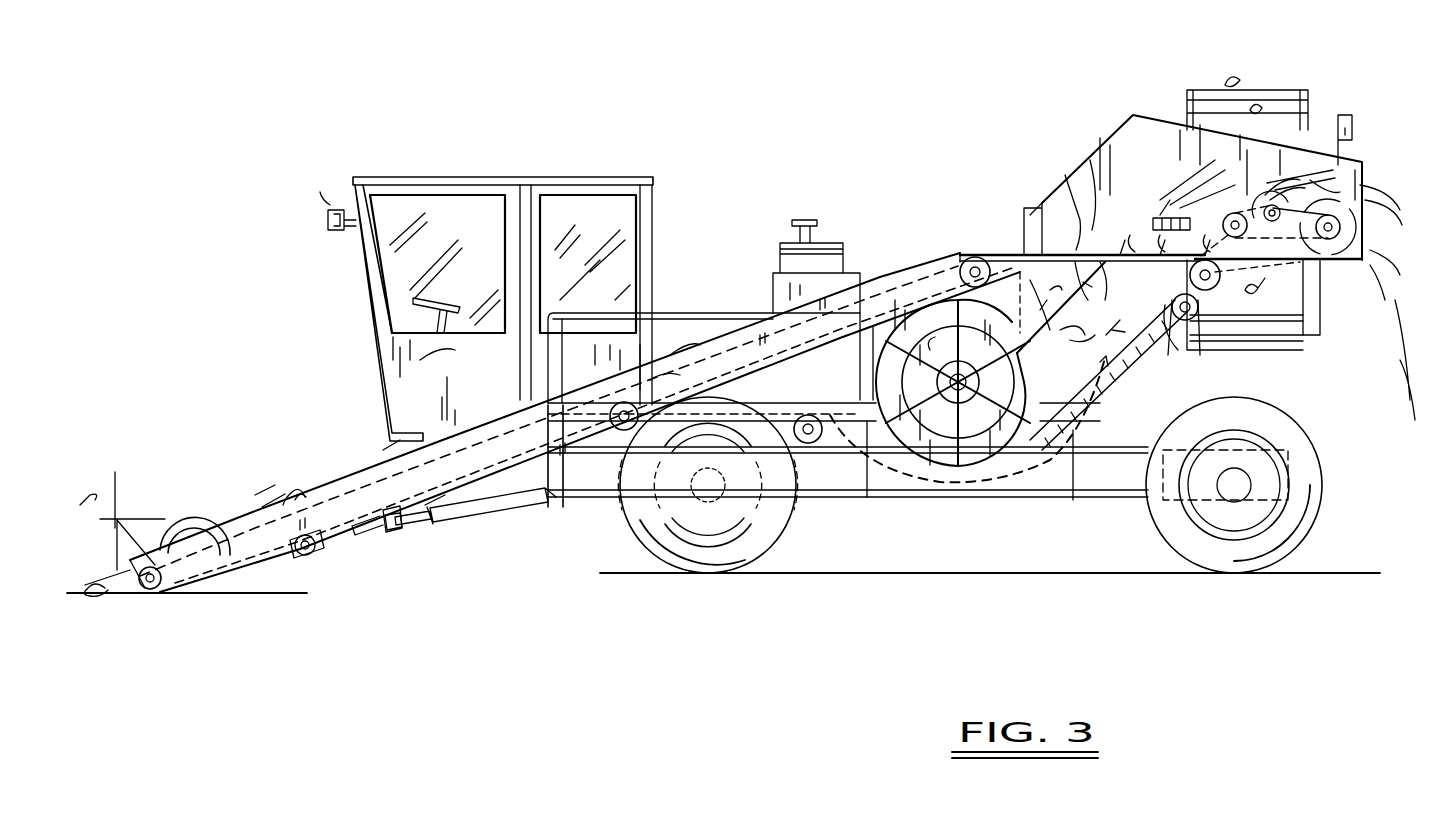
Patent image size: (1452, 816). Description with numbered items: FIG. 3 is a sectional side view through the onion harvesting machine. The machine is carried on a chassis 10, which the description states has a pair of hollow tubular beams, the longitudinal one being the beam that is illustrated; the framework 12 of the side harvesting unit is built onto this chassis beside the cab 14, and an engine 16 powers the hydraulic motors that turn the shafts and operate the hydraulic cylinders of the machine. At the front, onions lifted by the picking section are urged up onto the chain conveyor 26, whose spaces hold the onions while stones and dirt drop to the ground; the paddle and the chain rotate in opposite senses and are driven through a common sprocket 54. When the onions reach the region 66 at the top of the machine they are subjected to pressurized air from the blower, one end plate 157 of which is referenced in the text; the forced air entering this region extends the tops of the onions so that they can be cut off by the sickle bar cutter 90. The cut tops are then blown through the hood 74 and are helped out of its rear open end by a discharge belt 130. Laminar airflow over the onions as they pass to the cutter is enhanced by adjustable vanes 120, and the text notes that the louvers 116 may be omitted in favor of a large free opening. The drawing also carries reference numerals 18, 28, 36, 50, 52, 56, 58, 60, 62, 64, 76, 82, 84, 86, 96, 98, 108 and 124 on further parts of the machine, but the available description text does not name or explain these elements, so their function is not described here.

The chassis 10 is at (975, 497).
The framework 12 is at (865, 430).
The cab 14 is at (510, 178).
The engine 16 is at (852, 272).
The wheels 18 is at (780, 525).
The chain conveyor 26 is at (726, 335).
The conveyor frame 28 is at (390, 482).
The hydraulic cylinder 36 is at (488, 520).
The pivot mount 50 is at (363, 524).
The conveyor rollers 52 is at (312, 556).
The common sprocket 54 is at (155, 592).
The roller 56 is at (1210, 322).
The roller 58 is at (1305, 275).
The drum roller 60 is at (1362, 232).
The idler roller 62 is at (1262, 210).
The upper conveyor roller 64 is at (965, 258).
The region 66 is at (1150, 215).
The hood 74 is at (1115, 133).
The housing wall 76 is at (1044, 193).
The rear frame 82 is at (1283, 350).
The support post 84 is at (1322, 320).
The upper frame 86 is at (1262, 92).
The sickle bar cutter 90 is at (1163, 215).
The rear view mirror 96 is at (332, 212).
The rear bracket 98 is at (1345, 115).
The air passage 108 is at (1078, 470).
The louvers 116 is at (1108, 394).
The adjustable vanes 120 is at (1055, 252).
The plant material 124 is at (1077, 302).
The discharge belt 130 is at (1298, 198).
The end plate 157 is at (1036, 352).